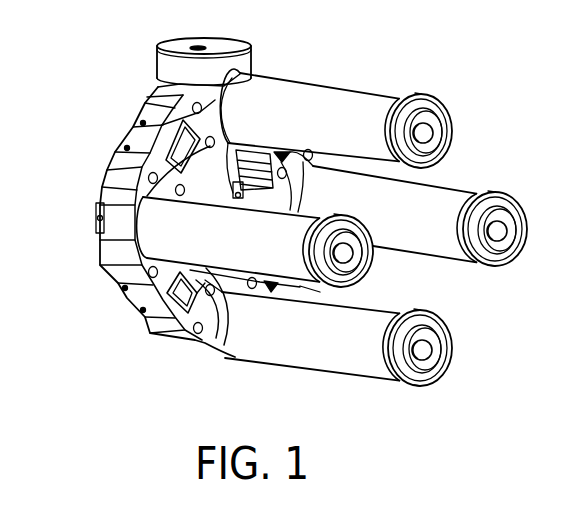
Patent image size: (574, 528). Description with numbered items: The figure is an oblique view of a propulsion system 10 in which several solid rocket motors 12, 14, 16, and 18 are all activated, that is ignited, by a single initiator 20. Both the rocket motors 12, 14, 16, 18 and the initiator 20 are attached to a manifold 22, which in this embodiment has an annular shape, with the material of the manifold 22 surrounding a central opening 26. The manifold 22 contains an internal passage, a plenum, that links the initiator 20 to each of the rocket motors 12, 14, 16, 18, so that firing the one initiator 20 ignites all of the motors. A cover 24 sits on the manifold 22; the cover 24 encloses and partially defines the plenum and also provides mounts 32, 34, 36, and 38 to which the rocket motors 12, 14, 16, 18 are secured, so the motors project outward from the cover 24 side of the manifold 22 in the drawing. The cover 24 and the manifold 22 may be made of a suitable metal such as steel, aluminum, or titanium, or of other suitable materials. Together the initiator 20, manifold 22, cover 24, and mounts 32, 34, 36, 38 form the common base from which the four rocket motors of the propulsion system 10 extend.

The propulsion system 10 is at (108, 90).
The solid rocket motor 12 is at (336, 93).
The solid rocket motor 14 is at (453, 202).
The solid rocket motor 16 is at (362, 358).
The solid rocket motor 18 is at (179, 198).
The initiator 20 is at (253, 56).
The manifold 22 is at (120, 173).
The cover 24 is at (172, 143).
The central opening 26 is at (207, 177).
The mount 32 is at (237, 72).
The mount 34 is at (408, 104).
The mount 36 is at (207, 332).
The mount 38 is at (163, 240).